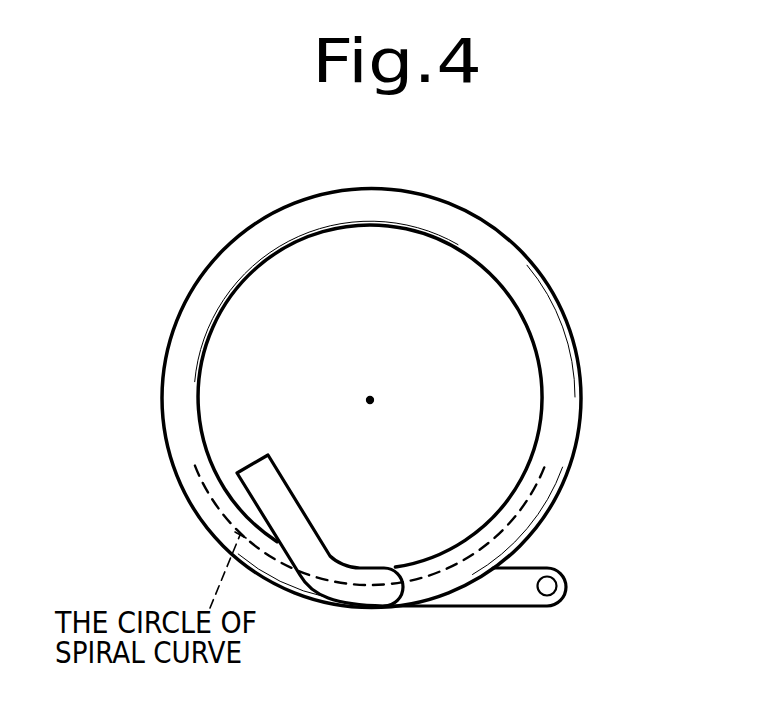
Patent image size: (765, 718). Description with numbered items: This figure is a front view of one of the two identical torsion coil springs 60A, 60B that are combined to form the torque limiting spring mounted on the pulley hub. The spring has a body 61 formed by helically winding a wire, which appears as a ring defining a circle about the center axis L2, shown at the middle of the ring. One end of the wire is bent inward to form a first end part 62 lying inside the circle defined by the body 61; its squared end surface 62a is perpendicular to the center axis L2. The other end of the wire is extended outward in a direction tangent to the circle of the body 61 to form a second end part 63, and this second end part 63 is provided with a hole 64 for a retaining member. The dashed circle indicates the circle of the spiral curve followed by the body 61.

The torsion coil spring 60A is at (524, 243).
The torsion coil spring 60B is at (409, 428).
The body 61 is at (583, 380).
The first end part 62 is at (275, 468).
The end surface 62a is at (298, 532).
The second end part 63 is at (508, 597).
The hole 64 is at (553, 582).
The center axis L2 is at (370, 400).